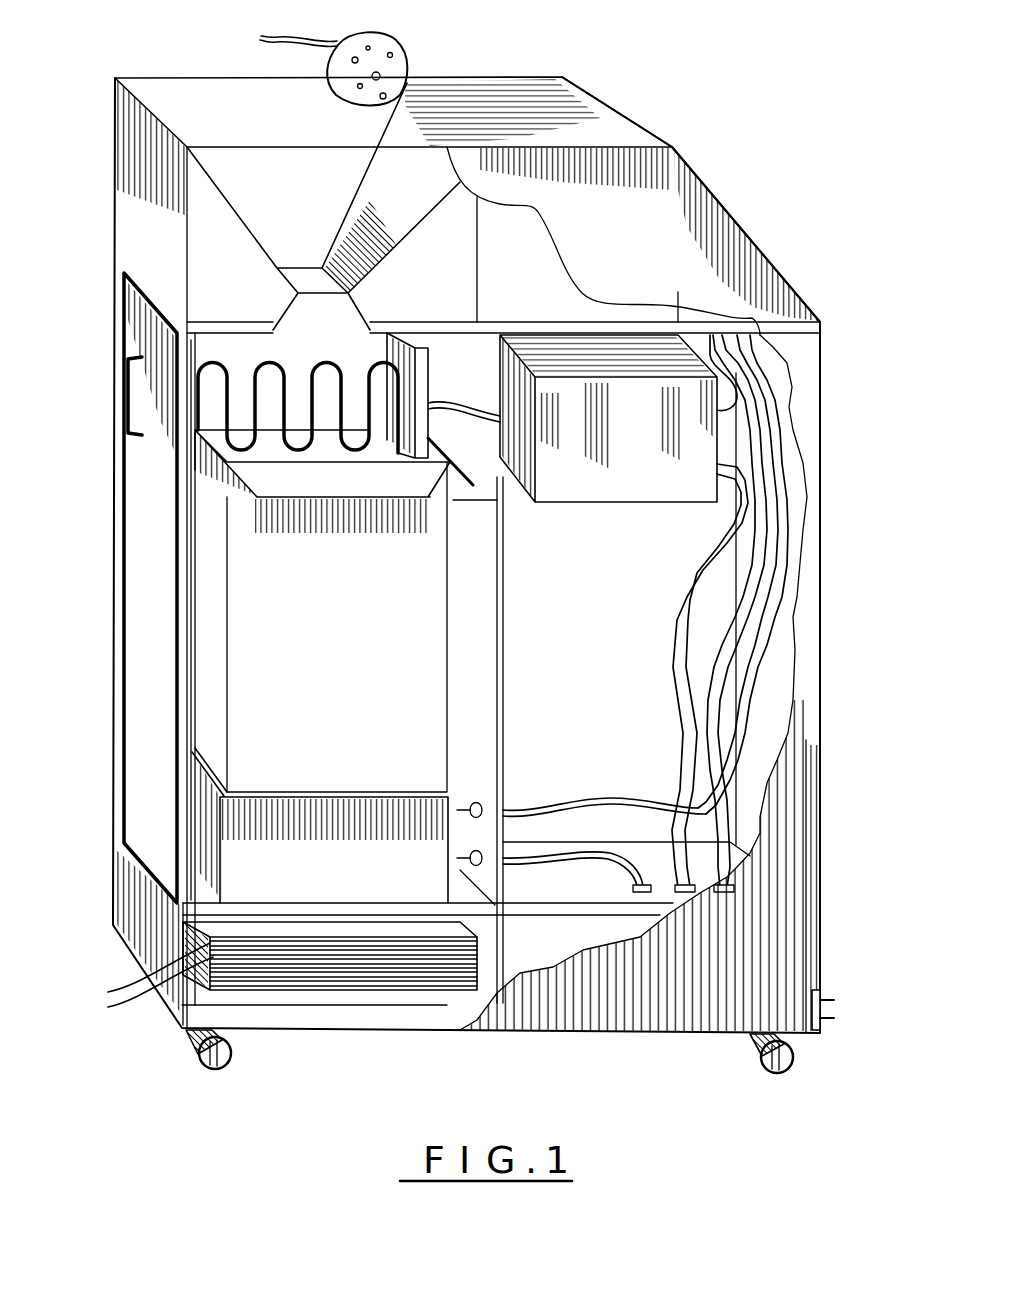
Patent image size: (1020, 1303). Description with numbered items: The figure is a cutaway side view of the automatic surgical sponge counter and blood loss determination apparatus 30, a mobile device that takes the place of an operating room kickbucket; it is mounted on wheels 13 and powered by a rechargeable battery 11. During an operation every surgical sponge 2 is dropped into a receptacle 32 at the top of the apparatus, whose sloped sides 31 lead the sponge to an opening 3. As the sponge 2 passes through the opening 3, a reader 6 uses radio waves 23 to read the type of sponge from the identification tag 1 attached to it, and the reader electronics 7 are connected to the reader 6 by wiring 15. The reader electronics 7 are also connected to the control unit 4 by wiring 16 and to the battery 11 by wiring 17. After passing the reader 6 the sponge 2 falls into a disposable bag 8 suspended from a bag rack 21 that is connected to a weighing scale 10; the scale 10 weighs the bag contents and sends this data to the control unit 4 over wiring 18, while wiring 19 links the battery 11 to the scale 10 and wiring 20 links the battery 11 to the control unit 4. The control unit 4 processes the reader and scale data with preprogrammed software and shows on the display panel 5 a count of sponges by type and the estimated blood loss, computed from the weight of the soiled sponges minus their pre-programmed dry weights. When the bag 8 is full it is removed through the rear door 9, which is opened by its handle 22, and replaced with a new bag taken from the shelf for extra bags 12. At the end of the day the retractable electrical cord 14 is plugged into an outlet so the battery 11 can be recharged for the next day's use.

The identification tag 1 is at (263, 37).
The sponge 2 is at (400, 46).
The opening 3 is at (292, 180).
The control unit 4 is at (522, 233).
The display panel 5 is at (718, 197).
The reader 6 is at (445, 350).
The reader electronics 7 is at (608, 478).
The disposable bag 8 is at (297, 498).
The door 9 is at (140, 477).
The weighing scale 10 is at (240, 845).
The rechargeable battery 11 is at (750, 853).
The shelf for extra bags 12 is at (455, 1000).
The wheels 13 is at (233, 1055).
The retractable electrical cord 14 is at (838, 993).
The wiring interconnecting the reader electronics and the reader 15 is at (457, 403).
The wiring interconnecting the reader electronics and the control unit 16 is at (735, 325).
The wiring interconnecting the reader electronics and the battery 17 is at (674, 668).
The wiring interconnecting the control unit and the scale 18 is at (602, 798).
The wiring interconnecting the battery and the scale 19 is at (598, 870).
The wiring interconnecting the battery and the control unit 20 is at (765, 640).
The bag rack 21 is at (190, 607).
The handle for door 22 is at (124, 400).
The radio waves 23 is at (335, 362).
The automatic surgical sponge counter and blood loss determination apparatus 30 is at (843, 513).
The sloped sides of receptacle 31 is at (170, 105).
The receptacle 32 is at (193, 85).